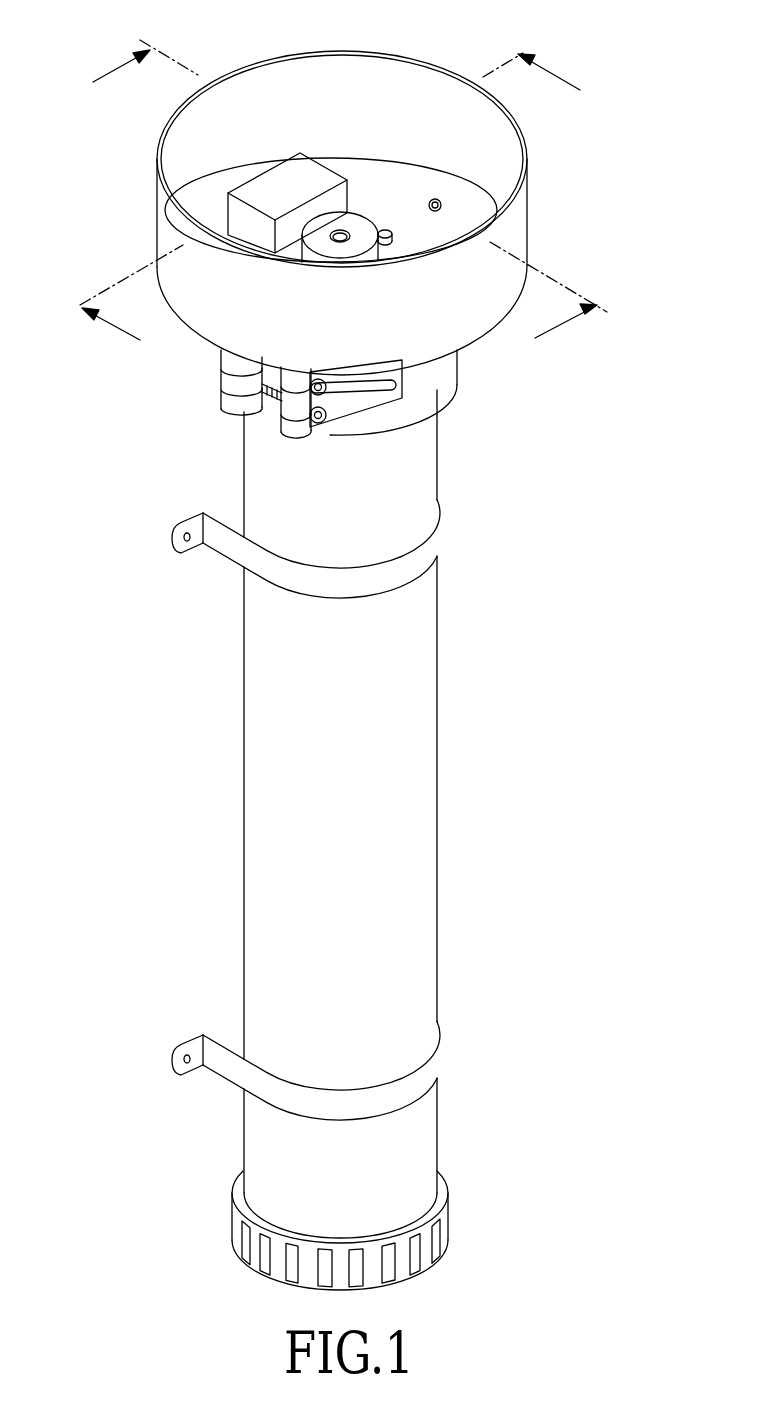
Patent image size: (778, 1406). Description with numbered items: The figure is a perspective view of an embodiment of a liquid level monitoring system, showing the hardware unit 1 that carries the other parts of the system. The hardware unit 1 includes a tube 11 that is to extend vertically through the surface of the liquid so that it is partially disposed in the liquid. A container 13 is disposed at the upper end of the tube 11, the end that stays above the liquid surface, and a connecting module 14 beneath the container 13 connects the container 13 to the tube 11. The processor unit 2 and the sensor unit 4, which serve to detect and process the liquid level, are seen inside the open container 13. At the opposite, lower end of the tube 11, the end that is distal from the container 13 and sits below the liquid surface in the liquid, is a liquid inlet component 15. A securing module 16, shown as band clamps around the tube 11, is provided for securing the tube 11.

The hardware unit 1 is at (438, 802).
The processor unit 2 is at (228, 213).
The sensor unit 4 is at (383, 228).
The tube 11 is at (437, 684).
The container 13 is at (525, 212).
The connecting module 14 is at (360, 407).
The liquid inlet component 15 is at (450, 1211).
The securing module 16 is at (222, 1077).